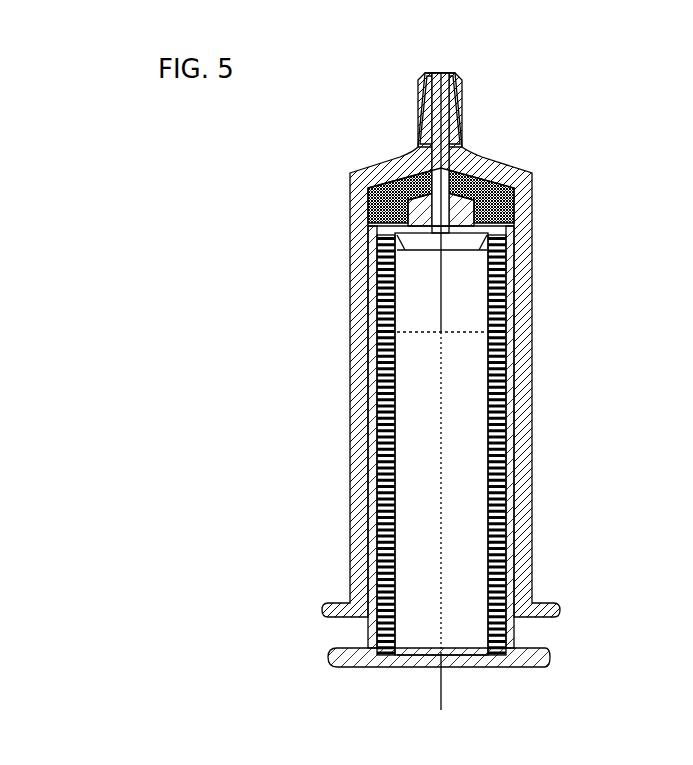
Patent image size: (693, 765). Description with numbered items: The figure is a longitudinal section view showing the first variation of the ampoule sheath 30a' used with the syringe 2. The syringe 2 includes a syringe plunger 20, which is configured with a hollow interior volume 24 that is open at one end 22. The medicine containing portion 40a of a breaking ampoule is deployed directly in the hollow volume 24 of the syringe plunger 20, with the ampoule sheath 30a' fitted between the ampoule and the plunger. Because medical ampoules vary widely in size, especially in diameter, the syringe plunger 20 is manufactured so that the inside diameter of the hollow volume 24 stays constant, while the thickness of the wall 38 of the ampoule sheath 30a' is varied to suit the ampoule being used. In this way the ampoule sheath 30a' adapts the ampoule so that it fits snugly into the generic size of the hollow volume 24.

The syringe 2 is at (230, 202).
The syringe plunger 20 is at (368, 405).
The open end 22 is at (405, 647).
The hollow interior volume 24 is at (380, 497).
The wall 38 is at (502, 489).
The medicine containing portion 40a is at (413, 288).
The ampoule sheath 30a' is at (503, 437).